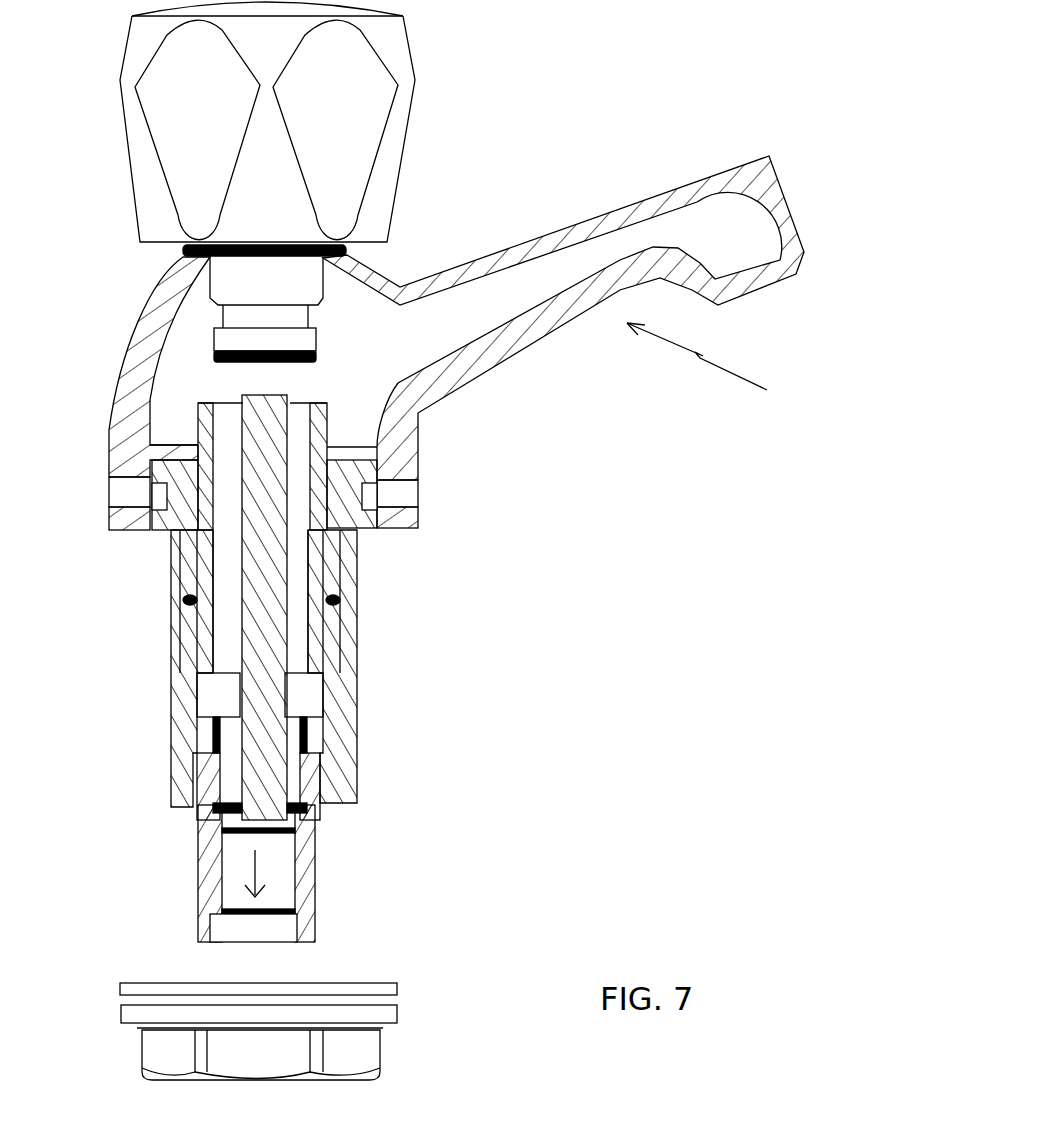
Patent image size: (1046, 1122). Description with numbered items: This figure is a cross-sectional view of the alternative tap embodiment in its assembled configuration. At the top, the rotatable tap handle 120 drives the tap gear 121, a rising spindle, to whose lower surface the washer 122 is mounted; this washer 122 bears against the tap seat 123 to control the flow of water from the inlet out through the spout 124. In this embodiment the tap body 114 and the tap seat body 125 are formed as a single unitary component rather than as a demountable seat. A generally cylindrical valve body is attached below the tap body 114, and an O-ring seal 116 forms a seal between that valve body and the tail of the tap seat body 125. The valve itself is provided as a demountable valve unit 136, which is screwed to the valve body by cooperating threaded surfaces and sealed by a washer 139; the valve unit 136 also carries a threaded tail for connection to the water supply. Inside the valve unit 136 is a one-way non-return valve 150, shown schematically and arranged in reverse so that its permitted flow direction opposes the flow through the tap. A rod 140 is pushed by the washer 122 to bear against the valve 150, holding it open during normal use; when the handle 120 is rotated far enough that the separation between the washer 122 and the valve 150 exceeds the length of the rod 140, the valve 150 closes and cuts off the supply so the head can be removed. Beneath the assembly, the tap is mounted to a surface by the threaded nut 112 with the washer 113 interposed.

The tap handle 120 is at (385, 128).
The tap gear 121 is at (283, 295).
The washer 122 is at (303, 363).
The tap seat 123 is at (327, 392).
The spout 124 is at (742, 257).
The tap body 114 is at (736, 370).
The tap seat body 125 is at (357, 548).
The O-ring seal 116 is at (340, 602).
The rod 140 is at (270, 647).
The washer 139 is at (325, 790).
The valve unit 136 is at (312, 858).
The valve 150 is at (275, 890).
The washer 113 is at (390, 990).
The threaded nut 112 is at (357, 1055).